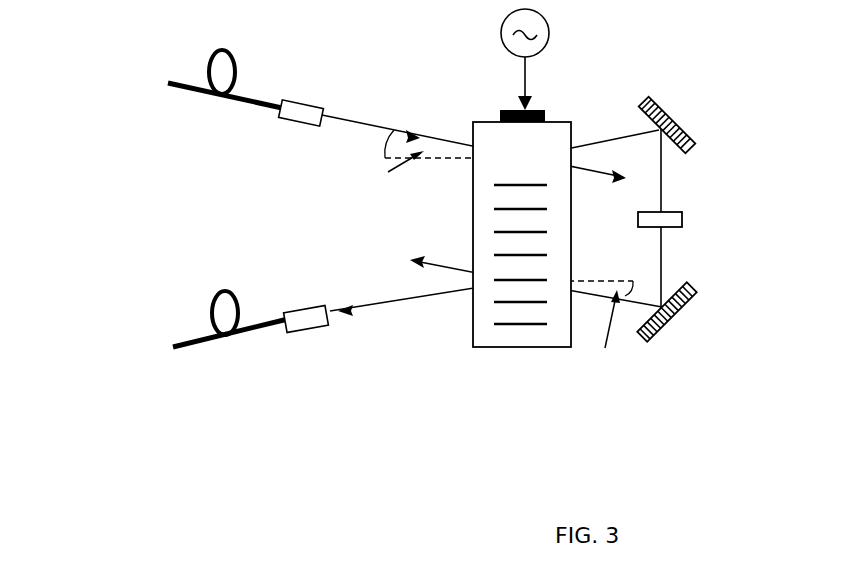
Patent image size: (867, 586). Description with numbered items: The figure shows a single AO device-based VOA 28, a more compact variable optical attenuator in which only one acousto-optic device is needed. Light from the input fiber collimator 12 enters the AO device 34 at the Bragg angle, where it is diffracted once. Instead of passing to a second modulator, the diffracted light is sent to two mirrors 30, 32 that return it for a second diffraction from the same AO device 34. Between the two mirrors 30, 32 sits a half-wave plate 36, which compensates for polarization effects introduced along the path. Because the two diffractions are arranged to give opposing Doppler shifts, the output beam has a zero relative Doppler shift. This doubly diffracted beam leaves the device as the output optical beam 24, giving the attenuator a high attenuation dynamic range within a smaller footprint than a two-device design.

The input fiber collimator 12 is at (248, 105).
The output optical beam 24 is at (252, 340).
The single AO device-based VOA 28 is at (406, 42).
The mirror 30 is at (693, 122).
The mirror 32 is at (660, 335).
The AO device 34 is at (481, 333).
The half-wave plate 36 is at (670, 226).